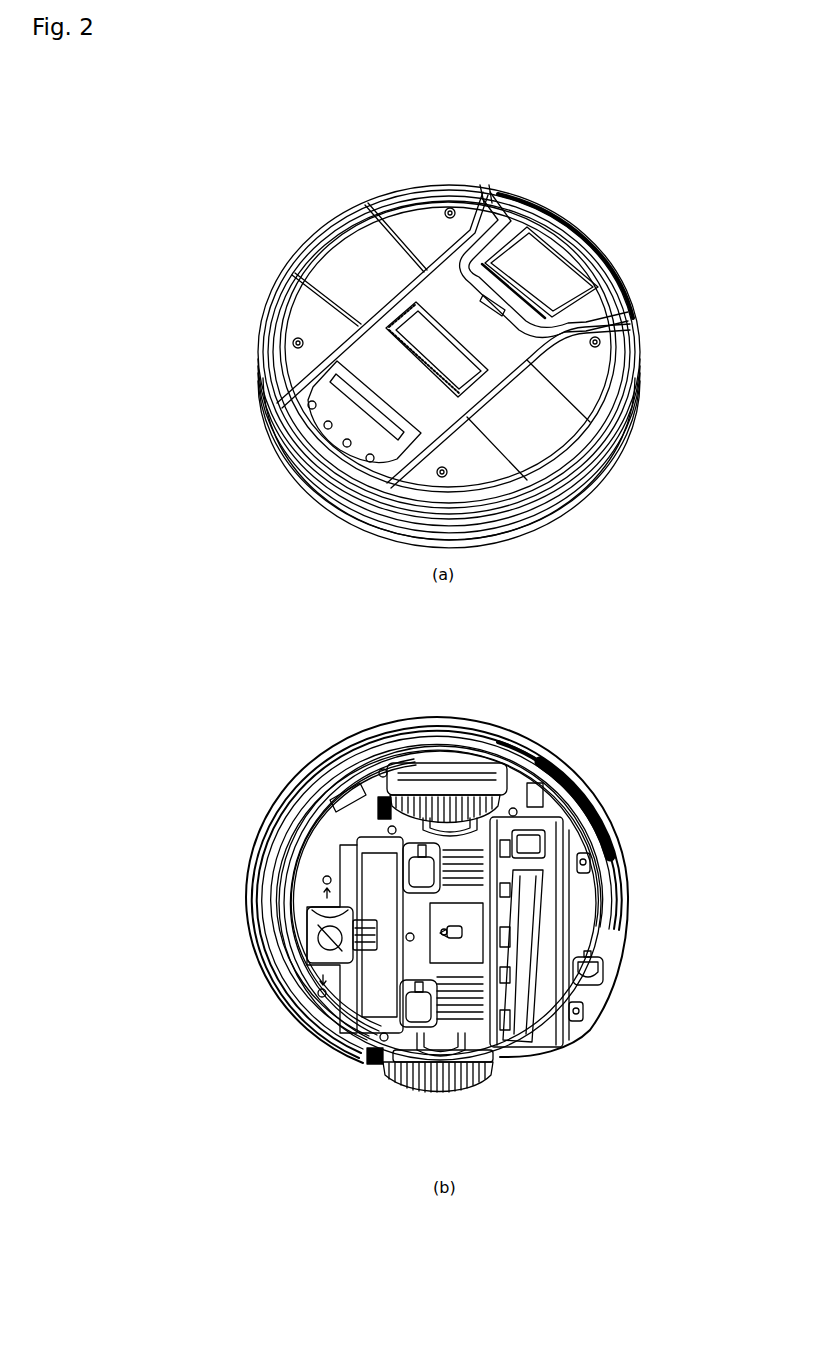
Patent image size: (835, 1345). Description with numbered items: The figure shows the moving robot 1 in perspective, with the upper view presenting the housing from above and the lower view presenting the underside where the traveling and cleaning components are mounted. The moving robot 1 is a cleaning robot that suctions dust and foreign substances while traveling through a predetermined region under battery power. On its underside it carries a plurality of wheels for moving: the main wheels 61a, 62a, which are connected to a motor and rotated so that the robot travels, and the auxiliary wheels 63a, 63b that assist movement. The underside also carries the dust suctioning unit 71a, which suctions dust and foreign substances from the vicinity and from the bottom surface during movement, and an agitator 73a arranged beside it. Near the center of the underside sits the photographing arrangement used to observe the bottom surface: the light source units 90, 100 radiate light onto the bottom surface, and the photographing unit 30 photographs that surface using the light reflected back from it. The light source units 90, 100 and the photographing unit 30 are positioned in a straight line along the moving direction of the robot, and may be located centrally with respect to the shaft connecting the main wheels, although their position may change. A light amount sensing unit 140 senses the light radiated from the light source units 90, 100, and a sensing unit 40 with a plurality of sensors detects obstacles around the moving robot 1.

The moving robot 1 is at (306, 178).
The first main wheel 61a is at (450, 805).
The main wheel 62a is at (442, 1093).
The auxiliary wheel 63a is at (338, 947).
The auxiliary wheel 63b is at (590, 975).
The dust suctioning unit 71a is at (495, 1045).
The agitator 73a is at (523, 1033).
The light source unit 90 is at (460, 930).
The photographing unit 30 is at (586, 908).
The sensing unit 40 is at (462, 931).
The light source unit 100 is at (463, 934).
The light amount sensing unit 140 is at (450, 913).